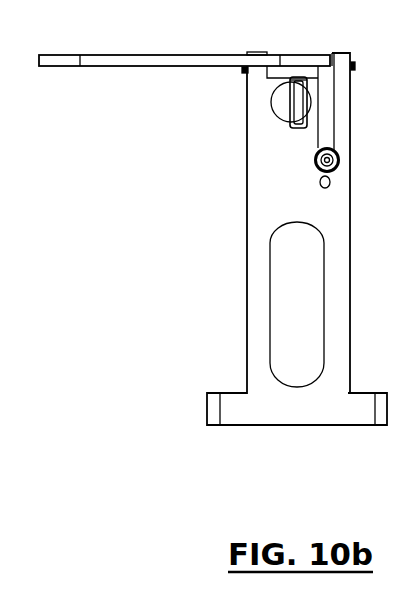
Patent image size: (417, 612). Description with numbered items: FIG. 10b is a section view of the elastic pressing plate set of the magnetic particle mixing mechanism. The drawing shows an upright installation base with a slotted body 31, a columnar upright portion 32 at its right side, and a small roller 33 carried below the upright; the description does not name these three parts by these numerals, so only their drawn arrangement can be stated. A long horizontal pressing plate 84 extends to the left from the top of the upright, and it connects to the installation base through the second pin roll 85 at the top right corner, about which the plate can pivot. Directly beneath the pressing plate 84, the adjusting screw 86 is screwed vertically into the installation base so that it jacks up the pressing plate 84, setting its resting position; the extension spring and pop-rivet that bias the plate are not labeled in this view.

The stand body 31 is at (335, 214).
The upright column 32 is at (327, 123).
The roller wheel 33 is at (338, 168).
The pressing plate 84 is at (158, 57).
The second pin roll 85 is at (355, 66).
The adjusting screw 86 is at (288, 103).